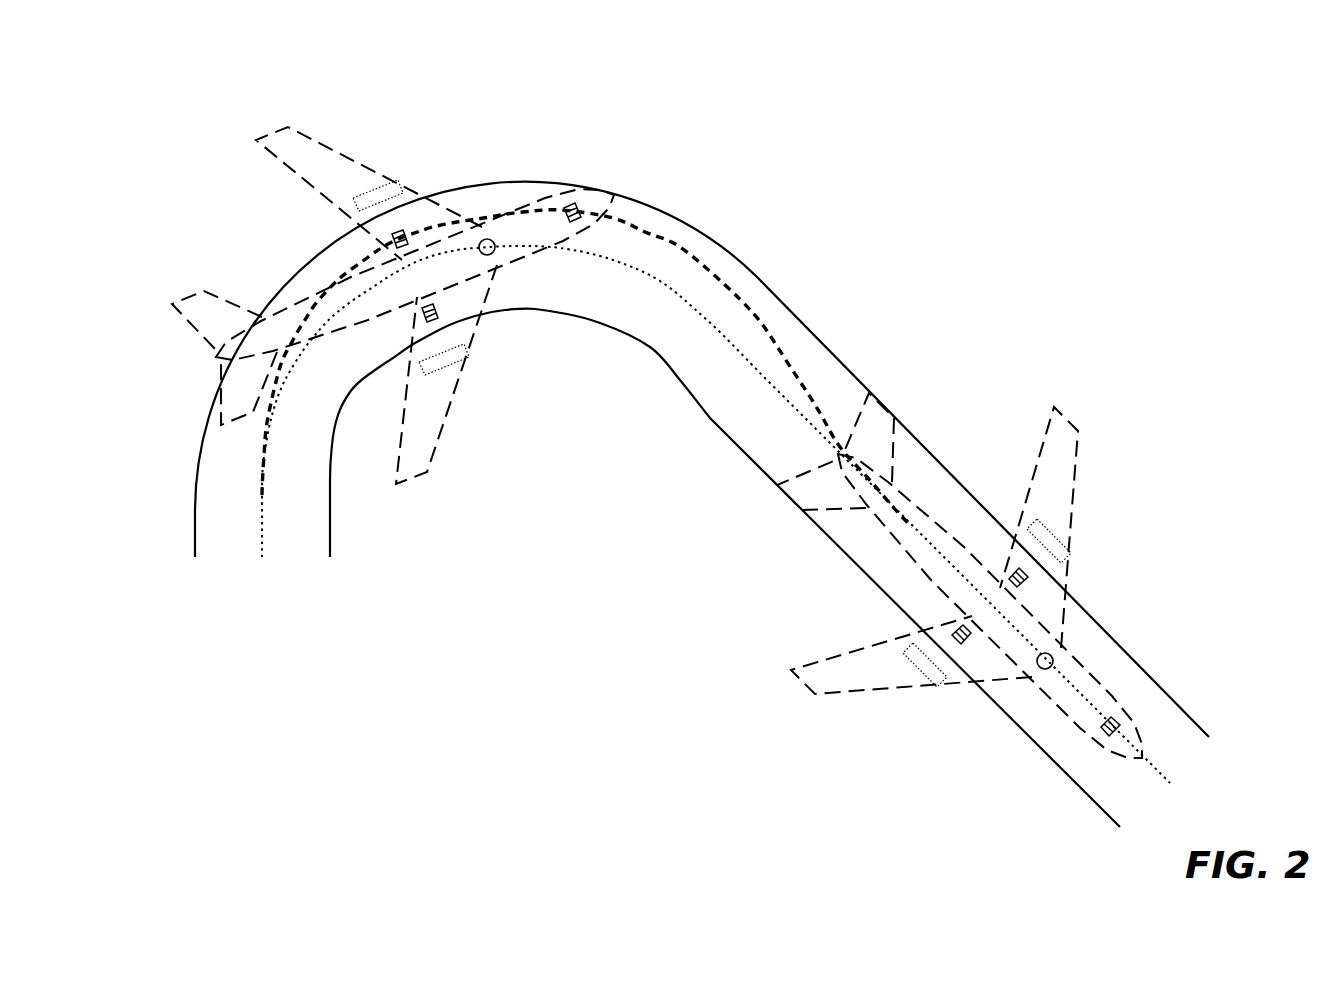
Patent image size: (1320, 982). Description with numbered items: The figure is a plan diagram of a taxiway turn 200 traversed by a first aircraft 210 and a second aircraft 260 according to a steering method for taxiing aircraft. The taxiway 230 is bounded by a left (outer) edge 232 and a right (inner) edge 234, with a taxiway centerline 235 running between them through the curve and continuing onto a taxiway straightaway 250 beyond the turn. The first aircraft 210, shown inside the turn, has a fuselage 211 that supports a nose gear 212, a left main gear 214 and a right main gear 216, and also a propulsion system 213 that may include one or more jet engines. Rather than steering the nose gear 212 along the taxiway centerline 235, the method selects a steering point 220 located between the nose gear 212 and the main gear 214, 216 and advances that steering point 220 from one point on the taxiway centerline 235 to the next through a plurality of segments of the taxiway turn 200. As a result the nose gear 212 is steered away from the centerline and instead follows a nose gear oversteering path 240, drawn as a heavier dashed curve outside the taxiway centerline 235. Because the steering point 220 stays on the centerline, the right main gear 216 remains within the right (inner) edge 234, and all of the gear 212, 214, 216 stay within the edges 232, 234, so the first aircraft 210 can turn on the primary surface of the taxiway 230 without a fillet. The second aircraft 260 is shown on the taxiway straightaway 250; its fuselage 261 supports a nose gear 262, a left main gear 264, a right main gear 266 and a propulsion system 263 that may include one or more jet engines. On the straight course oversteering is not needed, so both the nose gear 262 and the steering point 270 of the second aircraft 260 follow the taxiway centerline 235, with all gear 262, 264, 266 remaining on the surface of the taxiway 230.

The taxiway turn 200 is at (838, 230).
The first aircraft 210 is at (437, 460).
The fuselage 211 is at (290, 312).
The nose gear 212 is at (569, 207).
The propulsion system 213 is at (352, 212).
The left main gear 214 is at (398, 236).
The right main gear 216 is at (433, 320).
The steering point 220 is at (493, 251).
The taxiway 230 is at (652, 335).
The left (outer) edge of taxiway 232 is at (197, 523).
The right (inner) edge of taxiway 234 is at (332, 523).
The taxiway centerline 235 is at (760, 372).
The nose gear oversteering path 240 is at (678, 247).
The taxiway straightaway 250 is at (340, 292).
The second aircraft 260 is at (1078, 427).
The fuselage 261 is at (873, 513).
The nose gear 262 is at (1113, 733).
The propulsion system 263 is at (1053, 533).
The left main gear 264 is at (1012, 572).
The right main gear 266 is at (957, 633).
The steering point 270 is at (1037, 670).